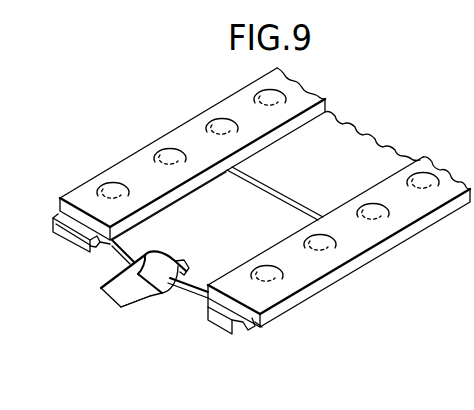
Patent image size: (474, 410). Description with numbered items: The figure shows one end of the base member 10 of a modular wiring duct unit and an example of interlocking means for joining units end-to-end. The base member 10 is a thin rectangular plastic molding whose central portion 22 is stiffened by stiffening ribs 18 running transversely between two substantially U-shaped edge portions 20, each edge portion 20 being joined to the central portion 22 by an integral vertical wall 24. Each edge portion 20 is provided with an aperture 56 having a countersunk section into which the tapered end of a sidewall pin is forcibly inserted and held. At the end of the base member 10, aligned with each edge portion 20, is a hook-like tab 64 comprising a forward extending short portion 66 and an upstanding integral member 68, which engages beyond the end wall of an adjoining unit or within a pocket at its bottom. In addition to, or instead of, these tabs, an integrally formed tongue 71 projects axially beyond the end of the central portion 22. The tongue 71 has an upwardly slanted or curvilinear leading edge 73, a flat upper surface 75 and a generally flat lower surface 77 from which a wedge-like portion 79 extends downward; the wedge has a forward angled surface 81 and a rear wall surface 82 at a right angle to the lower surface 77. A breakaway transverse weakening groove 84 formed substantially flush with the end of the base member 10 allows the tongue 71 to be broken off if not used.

The base member portion 10 is at (224, 92).
The stiffening ribs 18 is at (263, 183).
The edge portions 20 is at (127, 165).
The central portion 22 is at (268, 223).
The vertical wall 24 is at (168, 203).
The aperture 56 is at (410, 198).
The hook-like tab 64 is at (76, 248).
The forward extending short portion 66 is at (97, 250).
The upstanding integral member 68 is at (90, 240).
The tongue 71 is at (95, 292).
The leading edge 73 is at (116, 298).
The flat upper surface 75 is at (145, 257).
The lower surface 77 is at (182, 308).
The wedge-like portion 79 is at (148, 310).
The forward angled surface 81 is at (141, 304).
The rear wall surface 82 is at (157, 303).
The breakaway transverse weakening groove 84 is at (186, 267).